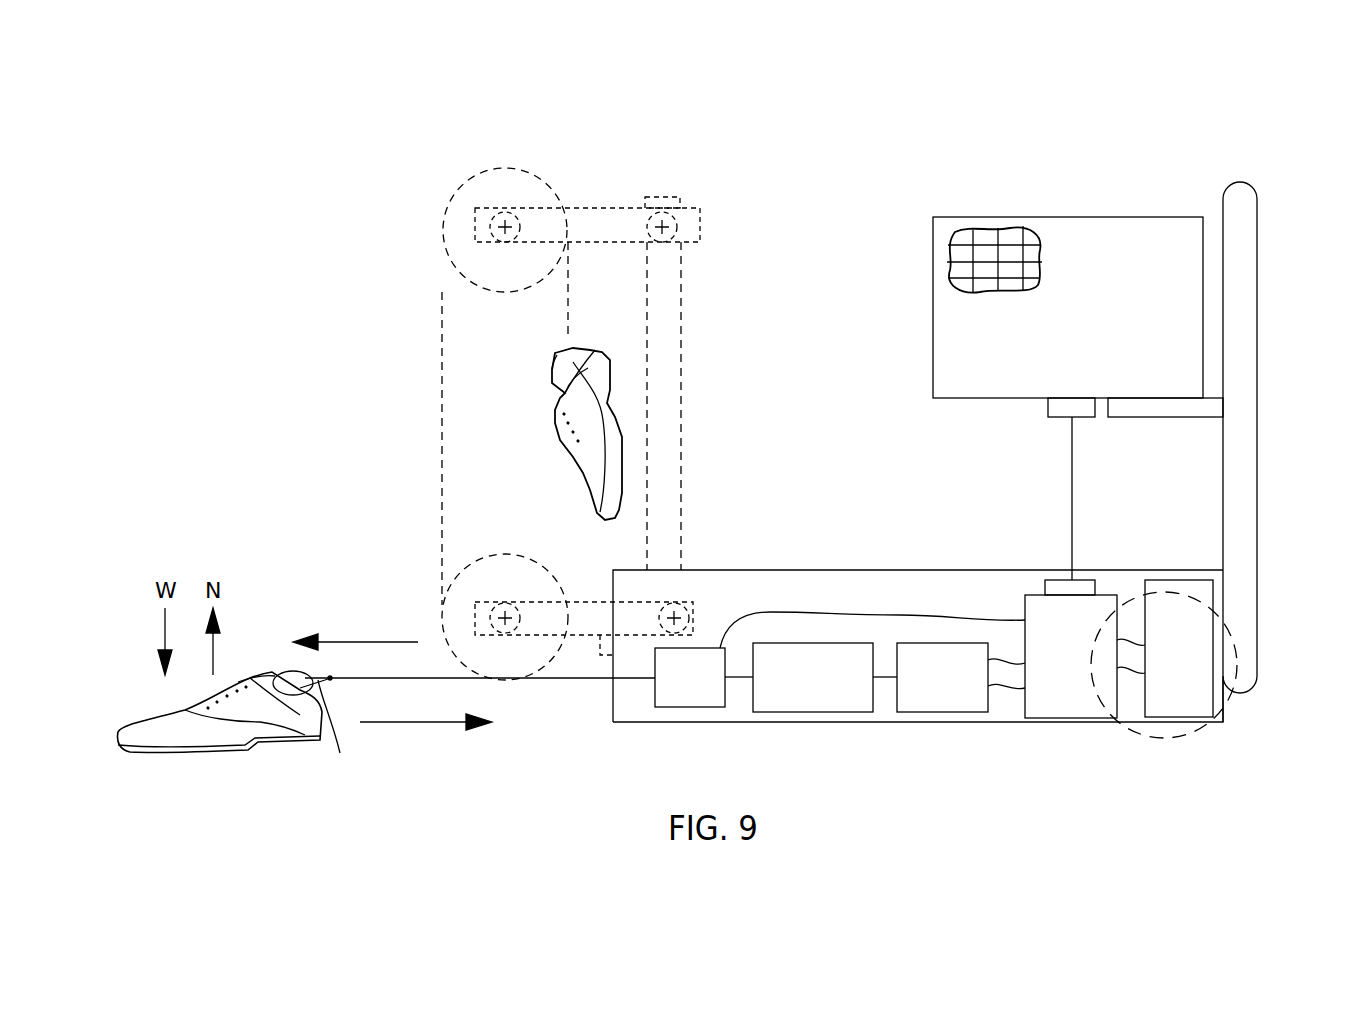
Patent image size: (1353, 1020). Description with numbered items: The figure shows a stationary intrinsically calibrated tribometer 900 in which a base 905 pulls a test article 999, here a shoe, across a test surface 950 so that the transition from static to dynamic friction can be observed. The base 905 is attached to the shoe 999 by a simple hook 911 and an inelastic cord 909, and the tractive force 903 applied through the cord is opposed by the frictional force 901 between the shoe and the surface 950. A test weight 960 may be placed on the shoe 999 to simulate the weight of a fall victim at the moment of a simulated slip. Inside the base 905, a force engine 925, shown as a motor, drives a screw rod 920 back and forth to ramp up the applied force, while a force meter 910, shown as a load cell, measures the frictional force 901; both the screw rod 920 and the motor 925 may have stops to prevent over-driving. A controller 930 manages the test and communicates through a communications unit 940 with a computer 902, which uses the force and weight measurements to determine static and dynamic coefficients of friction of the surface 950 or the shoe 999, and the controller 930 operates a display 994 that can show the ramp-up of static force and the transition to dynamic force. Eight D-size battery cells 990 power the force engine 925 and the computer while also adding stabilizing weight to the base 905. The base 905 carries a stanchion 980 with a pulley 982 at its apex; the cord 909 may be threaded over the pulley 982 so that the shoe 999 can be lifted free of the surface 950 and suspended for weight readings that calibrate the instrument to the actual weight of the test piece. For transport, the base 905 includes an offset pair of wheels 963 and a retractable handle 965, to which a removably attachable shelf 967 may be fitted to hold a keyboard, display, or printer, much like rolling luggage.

The stationary intrinsically calibrated tribometer 900 is at (822, 213).
The frictional force 901 is at (415, 640).
The computer 902 is at (1110, 227).
The tractive force 903 is at (450, 725).
The base 905 is at (772, 570).
The inelastic cord 909 is at (372, 683).
The force meter 910 is at (697, 707).
The hook 911 is at (330, 734).
The screw rod 920 is at (828, 712).
The force engine 925 is at (937, 712).
The controller 930 is at (1043, 718).
The communications unit 940 is at (1085, 590).
The test surface 950 is at (652, 762).
The test weight 960 is at (284, 672).
The wheels 963 is at (1240, 648).
The retractable handle 965 is at (1257, 568).
The removably attachable shelf 967 is at (1157, 415).
The stanchion 980 is at (683, 200).
The pulley 982 is at (508, 178).
The battery cells 990 is at (1185, 710).
The display 994 is at (1000, 237).
The test article 999 is at (124, 728).